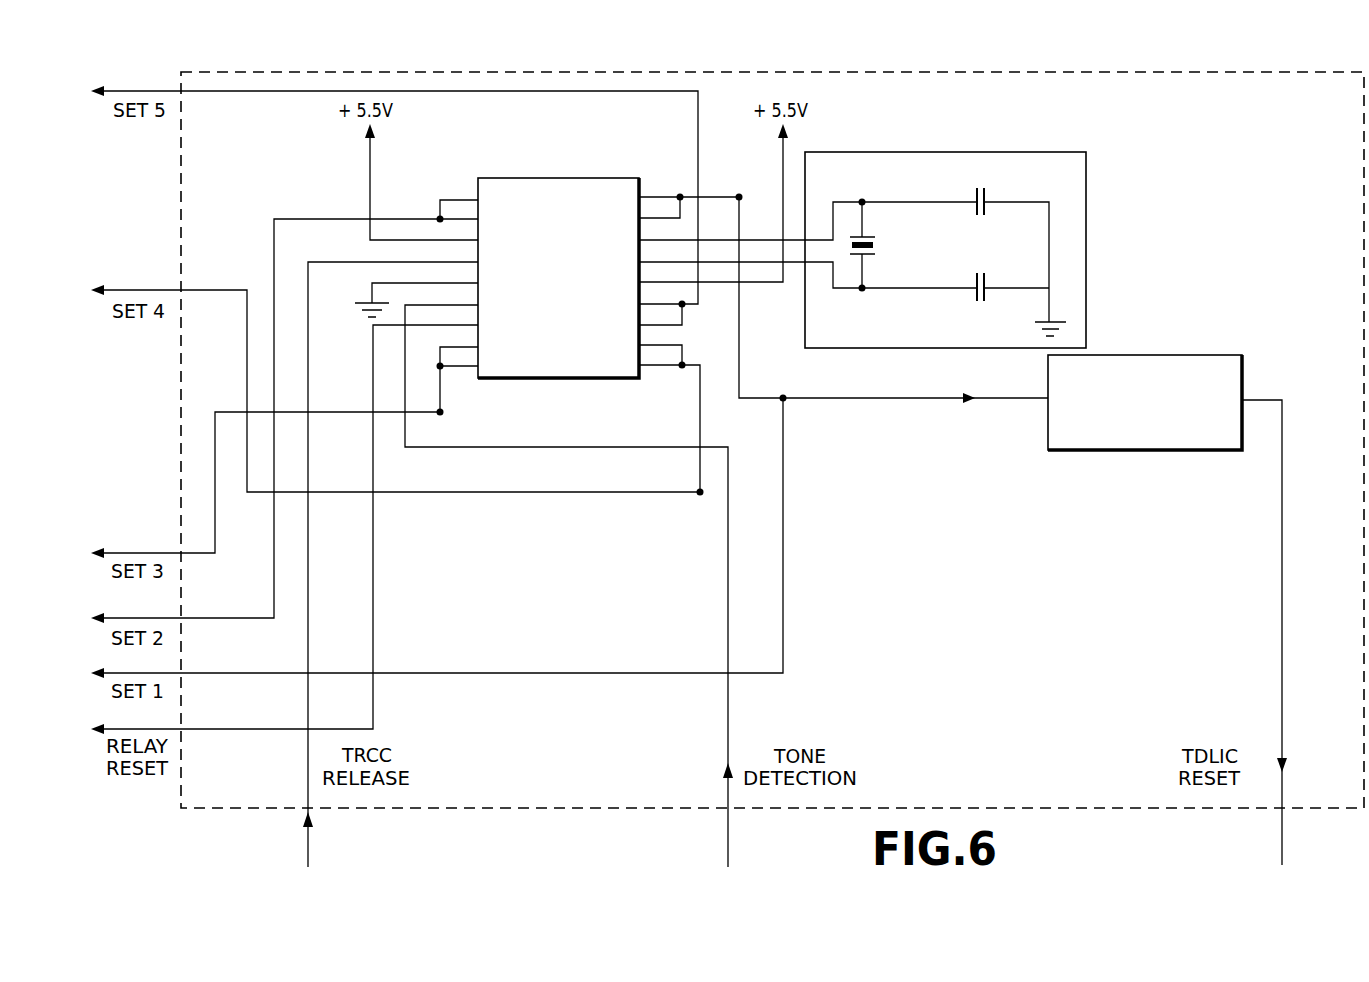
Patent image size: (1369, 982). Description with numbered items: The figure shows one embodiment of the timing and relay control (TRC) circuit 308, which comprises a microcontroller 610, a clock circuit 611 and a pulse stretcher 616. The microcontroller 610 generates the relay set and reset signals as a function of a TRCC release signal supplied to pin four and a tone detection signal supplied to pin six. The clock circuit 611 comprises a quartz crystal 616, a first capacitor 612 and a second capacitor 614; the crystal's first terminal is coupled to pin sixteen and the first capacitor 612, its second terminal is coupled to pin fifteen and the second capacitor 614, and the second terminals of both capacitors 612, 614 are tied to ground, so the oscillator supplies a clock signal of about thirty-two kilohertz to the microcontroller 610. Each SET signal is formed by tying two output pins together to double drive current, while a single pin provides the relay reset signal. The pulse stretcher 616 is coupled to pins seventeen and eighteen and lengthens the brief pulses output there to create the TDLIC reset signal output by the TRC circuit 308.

The TRC circuit 308 is at (1237, 71).
The microcontroller 610 is at (572, 178).
The clock circuit 611 is at (993, 152).
The first capacitor 612 is at (986, 200).
The second capacitor 614 is at (986, 287).
The pulse stretcher 616 is at (868, 237).